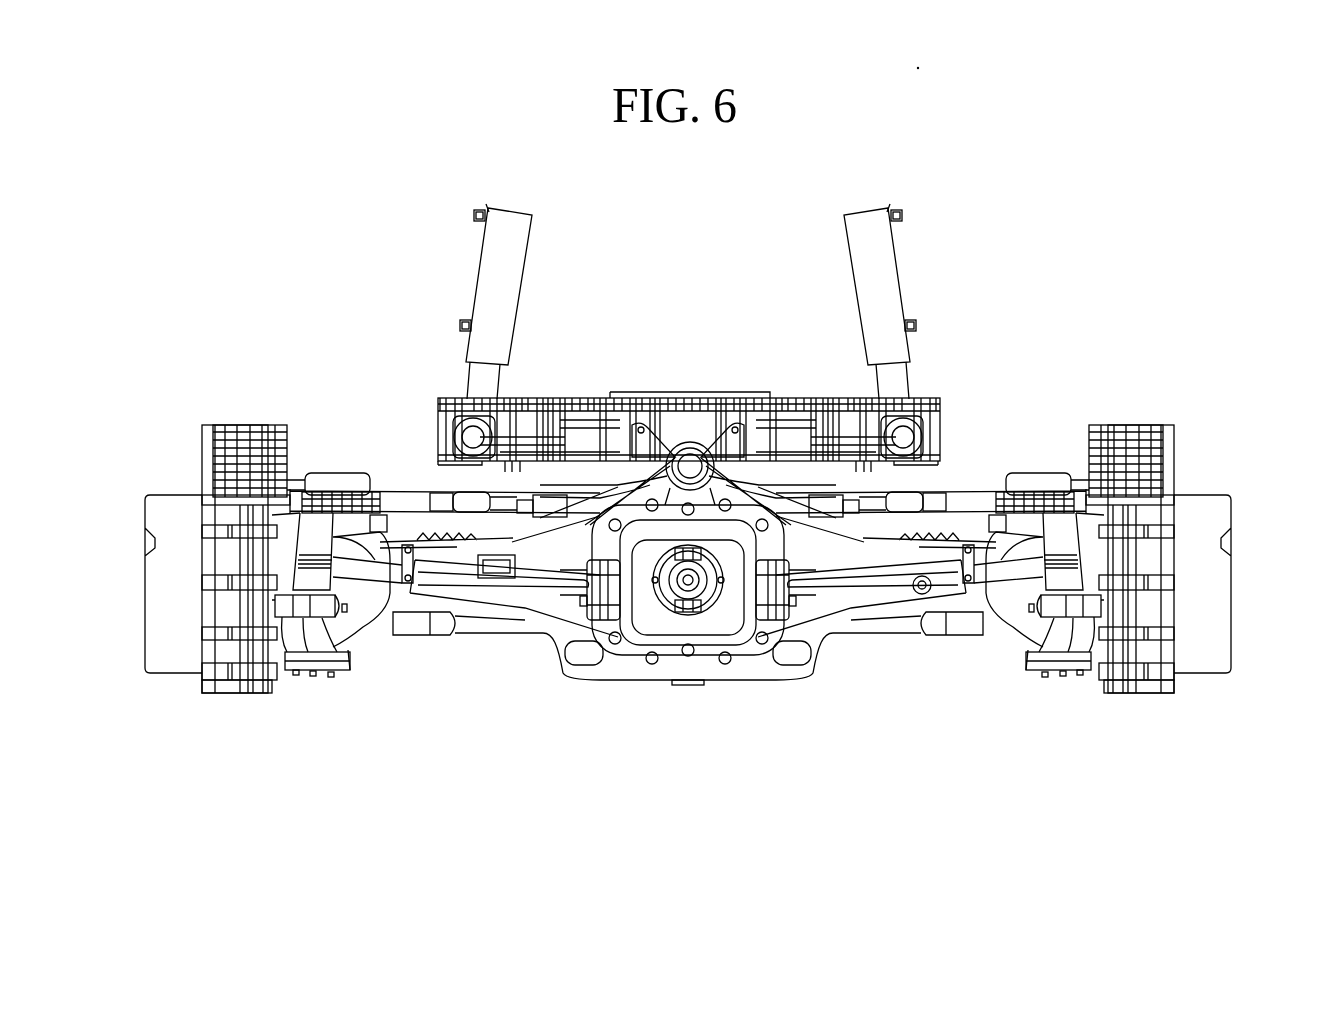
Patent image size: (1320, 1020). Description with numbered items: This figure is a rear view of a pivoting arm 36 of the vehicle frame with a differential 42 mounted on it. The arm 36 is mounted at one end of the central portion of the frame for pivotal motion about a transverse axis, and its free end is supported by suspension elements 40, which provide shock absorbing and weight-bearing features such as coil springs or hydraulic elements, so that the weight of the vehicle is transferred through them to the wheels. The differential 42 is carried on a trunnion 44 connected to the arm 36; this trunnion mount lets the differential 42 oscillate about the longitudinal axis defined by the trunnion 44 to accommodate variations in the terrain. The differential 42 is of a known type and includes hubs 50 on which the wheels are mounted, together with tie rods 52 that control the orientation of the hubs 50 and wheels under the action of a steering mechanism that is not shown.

The arm 36 is at (599, 400).
The suspension element 40 is at (488, 271).
The differential 42 is at (540, 597).
The trunnion 44 is at (655, 440).
The hub 50 is at (178, 655).
The tie rod 52 is at (960, 490).